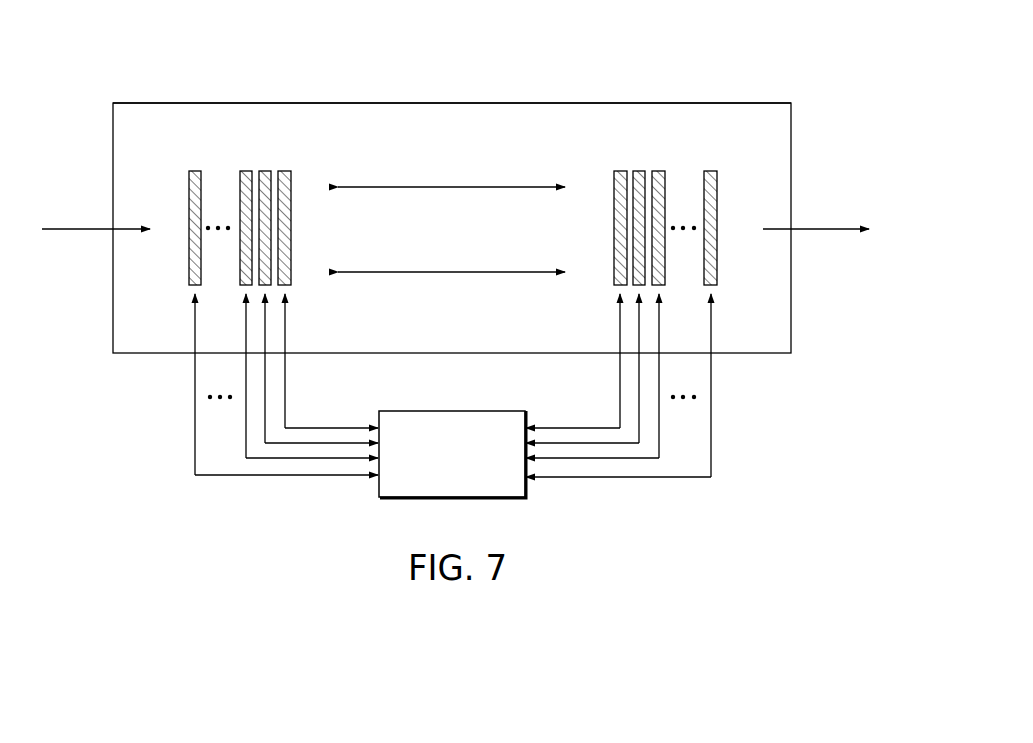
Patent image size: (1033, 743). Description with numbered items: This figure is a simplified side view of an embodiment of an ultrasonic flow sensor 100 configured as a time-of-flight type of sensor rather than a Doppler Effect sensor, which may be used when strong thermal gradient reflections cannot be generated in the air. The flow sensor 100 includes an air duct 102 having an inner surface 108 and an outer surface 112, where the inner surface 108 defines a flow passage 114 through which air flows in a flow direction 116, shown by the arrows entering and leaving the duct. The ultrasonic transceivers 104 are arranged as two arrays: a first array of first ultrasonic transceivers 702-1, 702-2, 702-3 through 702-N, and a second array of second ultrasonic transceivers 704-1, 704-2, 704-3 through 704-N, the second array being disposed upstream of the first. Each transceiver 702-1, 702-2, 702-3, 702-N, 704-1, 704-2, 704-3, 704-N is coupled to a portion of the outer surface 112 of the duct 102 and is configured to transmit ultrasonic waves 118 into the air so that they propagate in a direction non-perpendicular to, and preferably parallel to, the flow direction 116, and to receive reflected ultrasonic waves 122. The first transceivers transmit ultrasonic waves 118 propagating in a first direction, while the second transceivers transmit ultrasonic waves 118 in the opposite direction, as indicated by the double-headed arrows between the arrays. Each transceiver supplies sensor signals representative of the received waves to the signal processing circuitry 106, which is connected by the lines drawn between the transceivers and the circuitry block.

The ultrasonic flow sensor 100 is at (714, 62).
The air duct 102 is at (442, 101).
The ultrasonic transceivers 104 is at (732, 289).
The signal processing circuitry 106 is at (455, 410).
The inner surface 108 is at (398, 104).
The outer surface 112 is at (365, 103).
The flow passage 114 is at (515, 147).
The flow direction 116 is at (68, 229).
The ultrasonic waves 118 is at (512, 188).
The reflected ultrasonic waves 122 is at (390, 272).
The first ultrasonic transceiver 702-1 is at (285, 171).
The first ultrasonic transceiver 702-2 is at (265, 171).
The first ultrasonic transceiver 702-3 is at (240, 171).
The first ultrasonic transceiver 702-N is at (189, 218).
The second ultrasonic transceiver 704-1 is at (622, 171).
The second ultrasonic transceiver 704-2 is at (638, 171).
The second ultrasonic transceiver 704-3 is at (667, 171).
The second ultrasonic transceiver 704-N is at (742, 203).